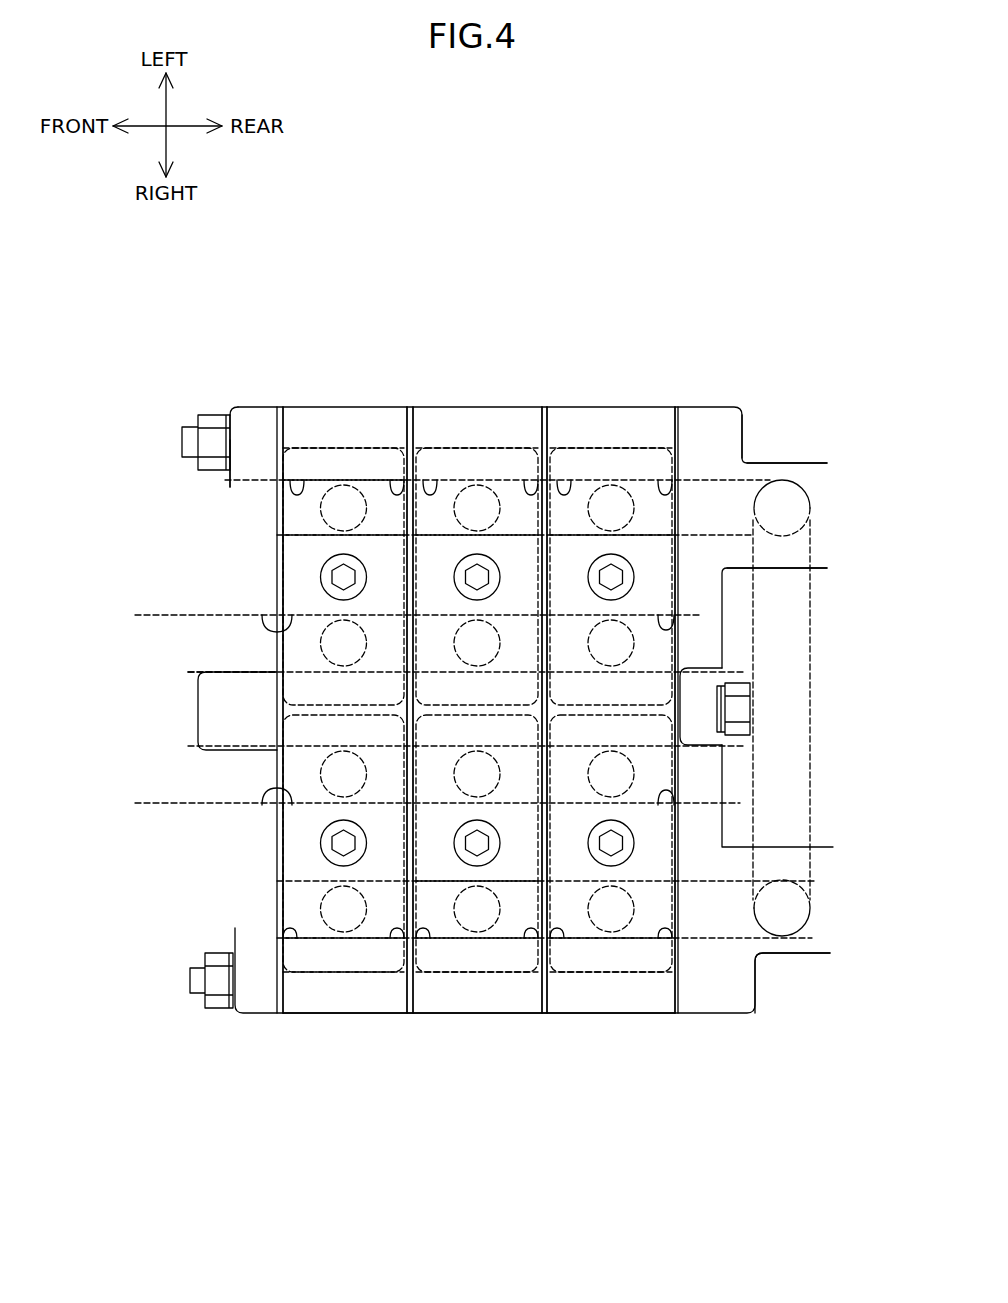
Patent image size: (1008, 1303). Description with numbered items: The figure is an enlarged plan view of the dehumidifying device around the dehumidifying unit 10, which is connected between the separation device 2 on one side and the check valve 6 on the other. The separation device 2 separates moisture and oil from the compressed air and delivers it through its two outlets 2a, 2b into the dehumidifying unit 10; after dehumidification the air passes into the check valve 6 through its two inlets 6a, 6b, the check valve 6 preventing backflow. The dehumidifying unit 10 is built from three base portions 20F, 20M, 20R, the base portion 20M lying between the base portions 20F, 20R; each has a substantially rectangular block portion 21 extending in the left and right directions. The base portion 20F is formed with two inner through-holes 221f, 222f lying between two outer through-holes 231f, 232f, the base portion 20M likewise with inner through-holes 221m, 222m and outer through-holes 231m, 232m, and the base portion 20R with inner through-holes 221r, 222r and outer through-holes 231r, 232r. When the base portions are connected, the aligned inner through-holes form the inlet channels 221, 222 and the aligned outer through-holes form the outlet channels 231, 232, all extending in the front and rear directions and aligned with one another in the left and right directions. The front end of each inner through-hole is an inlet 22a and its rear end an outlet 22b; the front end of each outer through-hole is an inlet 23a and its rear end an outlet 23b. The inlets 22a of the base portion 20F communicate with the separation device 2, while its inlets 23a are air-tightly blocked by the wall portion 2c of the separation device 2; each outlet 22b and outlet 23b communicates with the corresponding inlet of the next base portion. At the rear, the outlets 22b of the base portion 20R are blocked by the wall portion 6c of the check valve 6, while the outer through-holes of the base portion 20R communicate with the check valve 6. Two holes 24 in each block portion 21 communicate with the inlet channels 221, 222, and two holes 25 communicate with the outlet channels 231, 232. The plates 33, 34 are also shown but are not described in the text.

The dehumidifying unit 10 is at (765, 222).
The separation device 2 is at (173, 980).
The outlet 2a is at (170, 805).
The outlet 2b is at (158, 618).
The wall portion 2c is at (258, 412).
The check valve 6 is at (760, 1013).
The inlet 6a is at (800, 908).
The inlet 6b is at (787, 497).
The wall portion 6c is at (712, 423).
The base portion 20F is at (328, 407).
The base portion 20M is at (466, 407).
The base portion 20R is at (600, 407).
The block portion 21 is at (340, 1013).
The inlet 22a is at (275, 633).
The outlet 22b is at (287, 705).
The inlet 23a is at (277, 497).
The outlet 23b is at (415, 482).
The hole 24 is at (273, 507).
The hole 25 is at (345, 498).
The lower holding plate 33 is at (345, 954).
The upper holding plate 34 is at (338, 466).
The inlet channel 221 is at (277, 712).
The inner through-hole 221f is at (352, 930).
The inner through-hole 221m is at (488, 930).
The inner through-hole 221r is at (622, 930).
The inlet channel 222 is at (293, 705).
The inner through-hole 222f is at (365, 490).
The inner through-hole 222m is at (500, 490).
The inner through-hole 222r is at (632, 490).
The outlet channel 231 is at (455, 1013).
The outer through-hole 231f is at (403, 960).
The outer through-hole 231m is at (535, 960).
The outer through-hole 231r is at (668, 990).
The outlet channel 232 is at (312, 470).
The outer through-hole 232f is at (372, 475).
The outer through-hole 232m is at (505, 475).
The outer through-hole 232r is at (650, 470).